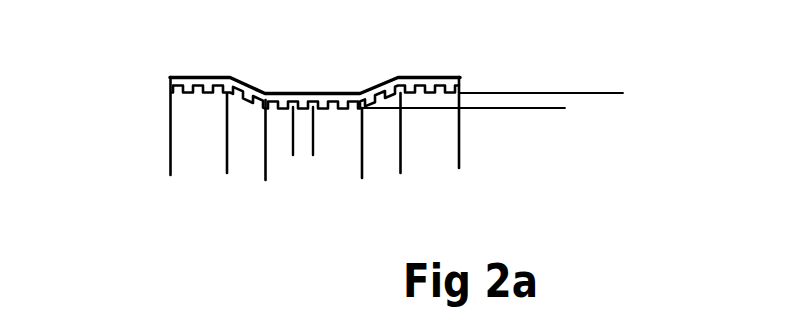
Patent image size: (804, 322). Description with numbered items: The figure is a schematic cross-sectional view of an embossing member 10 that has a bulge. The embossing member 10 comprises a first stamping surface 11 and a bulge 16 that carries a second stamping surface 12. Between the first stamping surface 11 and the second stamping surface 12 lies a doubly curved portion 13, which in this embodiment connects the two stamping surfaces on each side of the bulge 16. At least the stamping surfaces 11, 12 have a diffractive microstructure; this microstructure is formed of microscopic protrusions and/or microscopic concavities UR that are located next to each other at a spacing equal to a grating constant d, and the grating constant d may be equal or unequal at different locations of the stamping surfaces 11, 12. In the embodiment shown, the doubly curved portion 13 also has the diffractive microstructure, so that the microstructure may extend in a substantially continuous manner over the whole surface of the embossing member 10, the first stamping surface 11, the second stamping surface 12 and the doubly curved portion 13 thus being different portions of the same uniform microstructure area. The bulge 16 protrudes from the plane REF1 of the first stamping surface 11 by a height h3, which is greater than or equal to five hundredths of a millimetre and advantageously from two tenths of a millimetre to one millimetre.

The embossing member 10 is at (137, 84).
The first stamping surface 11 is at (226, 178).
The second stamping surface 12 is at (357, 202).
The doubly curved portion 13 is at (264, 191).
The bulge 16 is at (403, 46).
The microscopic concavities UR is at (200, 89).
The grating constant d is at (268, 143).
The height of the bulge h3 is at (556, 52).
The plane of the first stamping surface REF1 is at (607, 93).